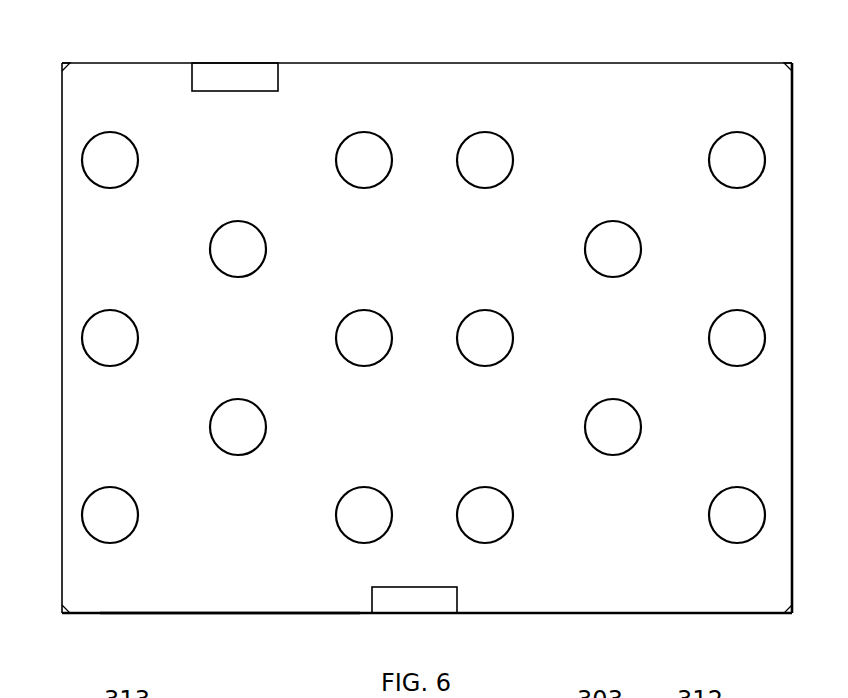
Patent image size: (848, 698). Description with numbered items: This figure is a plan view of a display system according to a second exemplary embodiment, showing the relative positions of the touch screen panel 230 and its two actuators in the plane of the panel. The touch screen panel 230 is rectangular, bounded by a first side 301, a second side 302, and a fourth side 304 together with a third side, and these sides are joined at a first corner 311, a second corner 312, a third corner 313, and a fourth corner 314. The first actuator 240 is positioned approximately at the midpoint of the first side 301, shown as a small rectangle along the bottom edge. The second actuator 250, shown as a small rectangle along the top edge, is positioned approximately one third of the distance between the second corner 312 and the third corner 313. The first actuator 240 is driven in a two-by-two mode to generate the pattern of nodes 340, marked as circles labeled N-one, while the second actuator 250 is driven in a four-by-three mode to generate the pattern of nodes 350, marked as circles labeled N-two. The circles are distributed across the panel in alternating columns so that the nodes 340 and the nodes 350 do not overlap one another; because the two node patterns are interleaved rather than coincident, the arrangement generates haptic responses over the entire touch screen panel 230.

The touch screen panel 230 is at (233, 613).
The first actuator 240 is at (413, 613).
The second actuator 250 is at (235, 67).
The first side 301 is at (595, 613).
The second side 302 is at (792, 447).
The fourth side 304 is at (61, 261).
The first corner 311 is at (788, 613).
The second corner 312 is at (792, 63).
The third corner 313 is at (62, 63).
The fourth corner 314 is at (62, 613).
The nodes 340 is at (238, 220).
The nodes 350 is at (110, 131).